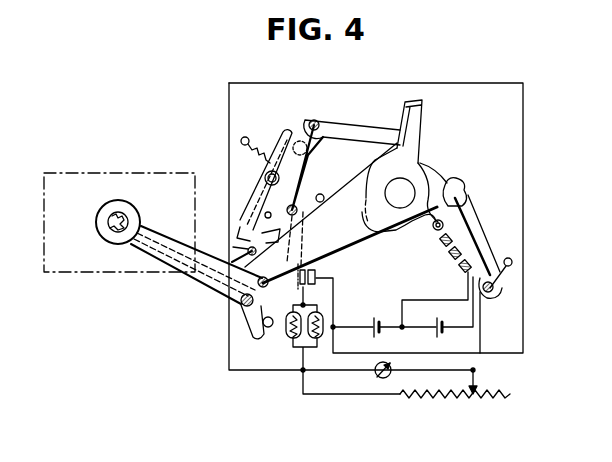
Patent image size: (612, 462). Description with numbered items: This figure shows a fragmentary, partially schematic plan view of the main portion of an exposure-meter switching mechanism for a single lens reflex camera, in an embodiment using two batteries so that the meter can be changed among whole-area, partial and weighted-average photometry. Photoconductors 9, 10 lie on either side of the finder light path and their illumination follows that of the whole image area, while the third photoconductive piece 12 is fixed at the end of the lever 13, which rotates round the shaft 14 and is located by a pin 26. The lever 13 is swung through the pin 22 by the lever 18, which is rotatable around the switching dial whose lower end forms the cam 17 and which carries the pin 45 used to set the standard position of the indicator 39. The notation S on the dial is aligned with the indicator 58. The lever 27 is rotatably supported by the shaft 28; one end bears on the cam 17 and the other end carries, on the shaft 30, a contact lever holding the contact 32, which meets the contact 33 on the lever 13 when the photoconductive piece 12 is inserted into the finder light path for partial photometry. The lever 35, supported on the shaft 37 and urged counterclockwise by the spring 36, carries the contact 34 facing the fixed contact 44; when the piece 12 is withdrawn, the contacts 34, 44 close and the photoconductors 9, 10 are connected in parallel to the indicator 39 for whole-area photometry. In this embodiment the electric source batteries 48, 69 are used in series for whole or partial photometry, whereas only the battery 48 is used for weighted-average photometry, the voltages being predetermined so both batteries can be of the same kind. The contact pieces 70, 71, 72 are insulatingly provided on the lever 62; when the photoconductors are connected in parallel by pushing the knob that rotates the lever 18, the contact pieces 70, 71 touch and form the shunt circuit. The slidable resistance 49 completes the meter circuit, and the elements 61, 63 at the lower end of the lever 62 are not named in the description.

The photoconductor 9 is at (316, 338).
The photoconductor 10 is at (290, 338).
The third photoconductive piece 12 is at (113, 240).
The lever 13 is at (200, 284).
The shaft 14 is at (240, 306).
The cam 17 is at (392, 236).
The lever 18 is at (362, 242).
The pin 22 is at (256, 270).
The tab lever 26 is at (257, 309).
The lever 27 is at (363, 131).
The shaft 28 is at (314, 119).
The shaft 30 is at (267, 176).
The contact 32 is at (245, 240).
The contact 33 is at (248, 254).
The contact 34 is at (306, 288).
The lever 35 is at (307, 216).
The spring 36 is at (324, 196).
The shaft 37 is at (262, 193).
The indicator 39 is at (376, 364).
The contact 44 is at (317, 276).
The pin 45 is at (460, 200).
The electric source battery 48 is at (380, 331).
The slidable resistance 49 is at (425, 398).
The indicator 58 is at (438, 160).
The pivot 61 is at (491, 300).
The lever 62 is at (474, 211).
The loop 63 is at (512, 266).
The electric source battery 69 is at (443, 331).
The contact piece 70 is at (441, 245).
The contact piece 71 is at (450, 258).
The contact piece 72 is at (462, 272).